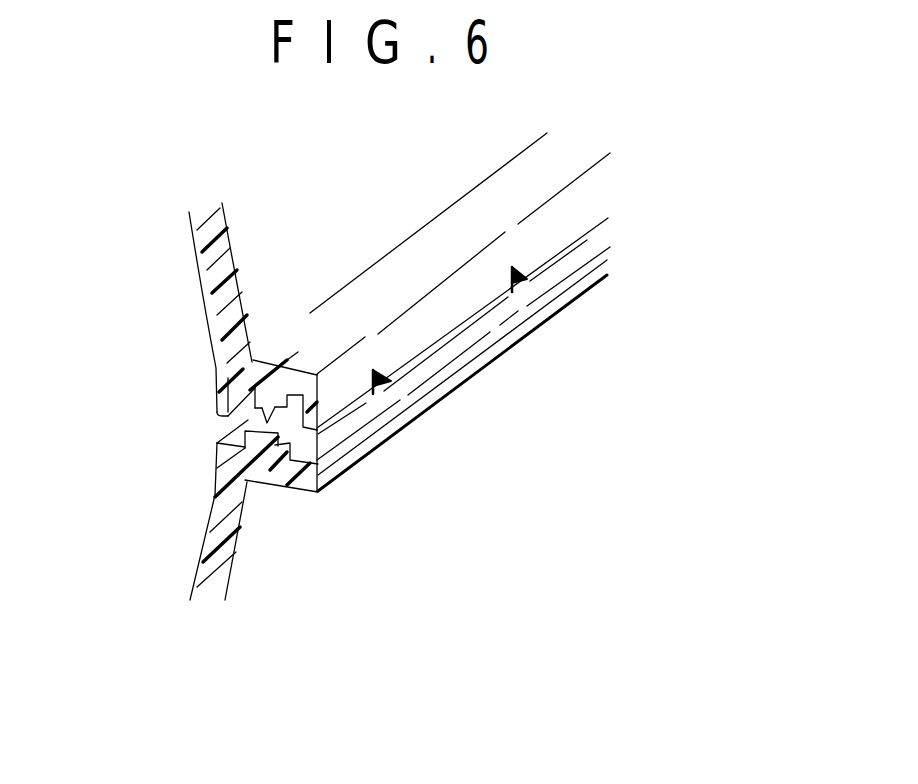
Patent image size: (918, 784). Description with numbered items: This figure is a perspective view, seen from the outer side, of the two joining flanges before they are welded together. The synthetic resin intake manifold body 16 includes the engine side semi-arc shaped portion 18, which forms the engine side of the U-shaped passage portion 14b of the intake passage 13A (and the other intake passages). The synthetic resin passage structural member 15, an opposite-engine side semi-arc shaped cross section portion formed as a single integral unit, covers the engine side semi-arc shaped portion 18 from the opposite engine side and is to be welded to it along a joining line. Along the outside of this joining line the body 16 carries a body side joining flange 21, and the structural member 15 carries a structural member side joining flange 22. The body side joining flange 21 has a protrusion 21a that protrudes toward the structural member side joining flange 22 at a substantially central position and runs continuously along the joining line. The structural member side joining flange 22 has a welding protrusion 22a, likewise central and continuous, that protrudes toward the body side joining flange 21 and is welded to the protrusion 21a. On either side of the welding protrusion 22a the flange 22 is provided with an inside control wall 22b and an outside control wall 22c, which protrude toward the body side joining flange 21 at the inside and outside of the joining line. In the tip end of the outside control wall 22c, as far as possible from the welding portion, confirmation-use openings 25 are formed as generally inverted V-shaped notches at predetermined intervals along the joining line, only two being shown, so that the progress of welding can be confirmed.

The U-shaped passage portion 14b is at (261, 272).
The synthetic resin passage structural member 15 is at (235, 260).
The structural member side joining flange 22 is at (361, 318).
The welding protrusion 22a is at (263, 407).
The inside control wall 22b is at (216, 415).
The outside control wall 22c is at (305, 445).
The confirmation-use opening 25 is at (517, 280).
The body side joining flange 21 is at (411, 424).
The protrusion 21a is at (277, 428).
The engine side semi-arc shaped portion 18 is at (215, 497).
The intake passage 13A is at (377, 546).
The synthetic resin intake manifold body 16 is at (377, 564).